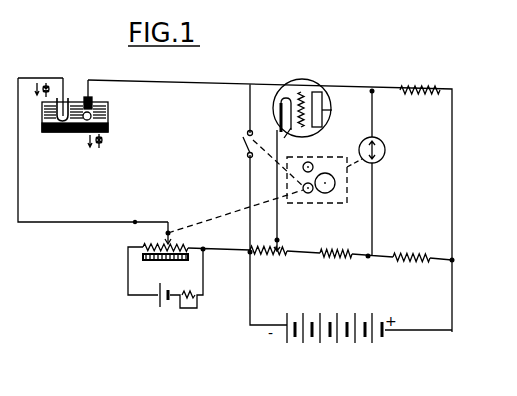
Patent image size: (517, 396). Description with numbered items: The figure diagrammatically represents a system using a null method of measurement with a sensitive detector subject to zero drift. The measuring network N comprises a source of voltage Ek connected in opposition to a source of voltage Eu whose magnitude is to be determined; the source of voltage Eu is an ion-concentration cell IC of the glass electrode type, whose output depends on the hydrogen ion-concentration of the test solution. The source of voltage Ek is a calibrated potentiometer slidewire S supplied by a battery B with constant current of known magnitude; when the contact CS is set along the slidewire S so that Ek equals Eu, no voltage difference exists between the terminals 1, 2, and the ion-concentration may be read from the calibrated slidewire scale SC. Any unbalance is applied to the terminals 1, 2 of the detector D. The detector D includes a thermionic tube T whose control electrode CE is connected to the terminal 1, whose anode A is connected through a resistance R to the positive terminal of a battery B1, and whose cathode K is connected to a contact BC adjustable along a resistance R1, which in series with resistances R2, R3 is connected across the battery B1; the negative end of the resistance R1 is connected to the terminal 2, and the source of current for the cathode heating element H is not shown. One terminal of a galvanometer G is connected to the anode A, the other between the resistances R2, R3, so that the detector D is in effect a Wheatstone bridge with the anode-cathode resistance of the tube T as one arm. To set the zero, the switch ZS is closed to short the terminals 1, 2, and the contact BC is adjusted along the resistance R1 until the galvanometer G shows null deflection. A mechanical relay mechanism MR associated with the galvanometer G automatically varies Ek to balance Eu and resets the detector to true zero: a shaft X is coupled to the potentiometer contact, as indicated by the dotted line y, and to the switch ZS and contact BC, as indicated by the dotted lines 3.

The source of voltage Eu is at (88, 72).
The ion-concentration cell IC is at (108, 117).
The terminal 1 is at (251, 86).
The switch ZS is at (243, 139).
The thermionic tube T is at (315, 82).
The control electrode CE is at (300, 91).
The cathode K is at (280, 113).
The anode A is at (332, 110).
The cathode heating element H is at (292, 128).
The detector D is at (348, 150).
The galvanometer G is at (385, 150).
The resistance R is at (418, 90).
The mechanical relay mechanism MR is at (322, 203).
The shaft X is at (337, 173).
The dotted lines 3 is at (286, 221).
The dotted line y is at (229, 211).
The measuring network N is at (160, 215).
The source of voltage Ek is at (205, 223).
The contact CS is at (163, 237).
The potentiometer slidewire S is at (165, 268).
The slidewire scale SC is at (172, 261).
The battery B is at (163, 308).
The terminal 2 is at (247, 253).
The contact BC is at (280, 240).
The resistance R1 is at (267, 256).
The resistance R2 is at (333, 260).
The resistance R3 is at (400, 261).
The battery B1 is at (352, 346).